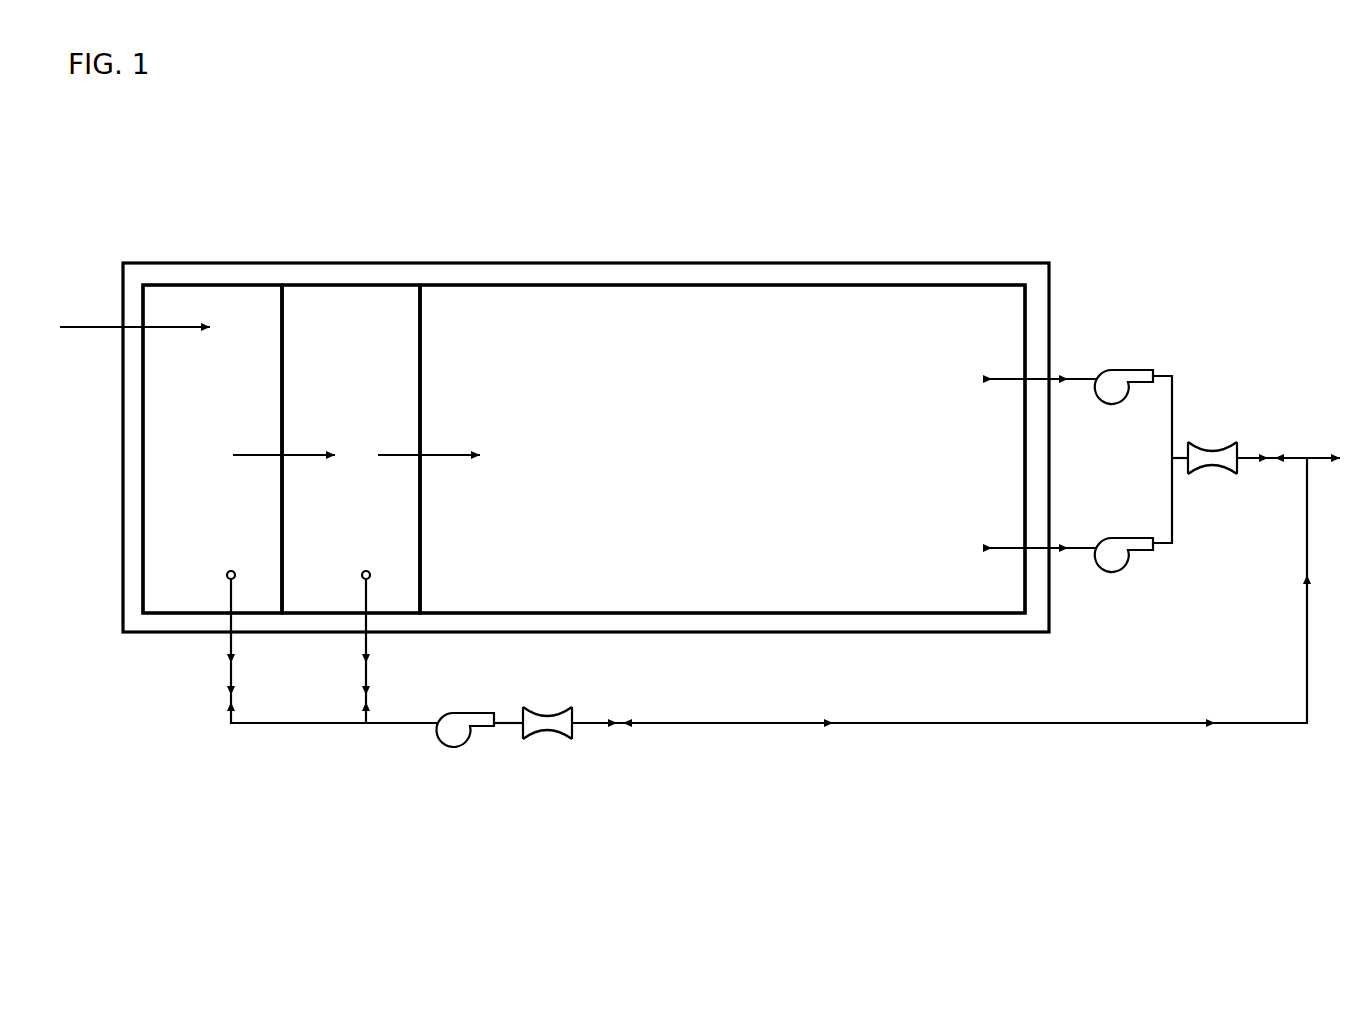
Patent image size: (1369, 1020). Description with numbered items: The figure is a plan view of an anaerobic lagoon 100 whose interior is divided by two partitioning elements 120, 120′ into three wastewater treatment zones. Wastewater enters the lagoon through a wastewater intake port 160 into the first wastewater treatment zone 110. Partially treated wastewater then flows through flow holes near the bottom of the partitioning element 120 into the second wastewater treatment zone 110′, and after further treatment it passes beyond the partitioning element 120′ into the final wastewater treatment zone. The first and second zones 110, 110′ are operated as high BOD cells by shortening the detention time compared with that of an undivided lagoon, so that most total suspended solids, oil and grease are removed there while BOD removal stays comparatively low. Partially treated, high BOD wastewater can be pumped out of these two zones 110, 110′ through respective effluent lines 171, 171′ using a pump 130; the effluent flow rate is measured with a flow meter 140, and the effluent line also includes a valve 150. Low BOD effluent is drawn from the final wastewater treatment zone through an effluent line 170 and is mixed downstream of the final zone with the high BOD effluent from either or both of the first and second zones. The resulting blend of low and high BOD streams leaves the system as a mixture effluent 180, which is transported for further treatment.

The anaerobic lagoon 100 is at (690, 242).
The first wastewater treatment zone 110 is at (212, 449).
The second wastewater treatment zone 110′ is at (326, 449).
The partitioning element 120 is at (283, 522).
The partitioning element 120′ is at (430, 522).
The pump 130 is at (447, 747).
The flow meter 140 is at (552, 745).
The valve 150 is at (620, 731).
The wastewater intake port 160 is at (132, 310).
The effluent line 170 is at (1068, 372).
The effluent line 171 is at (233, 640).
The effluent line 171′ is at (372, 647).
The mixture effluent 180 is at (1271, 443).